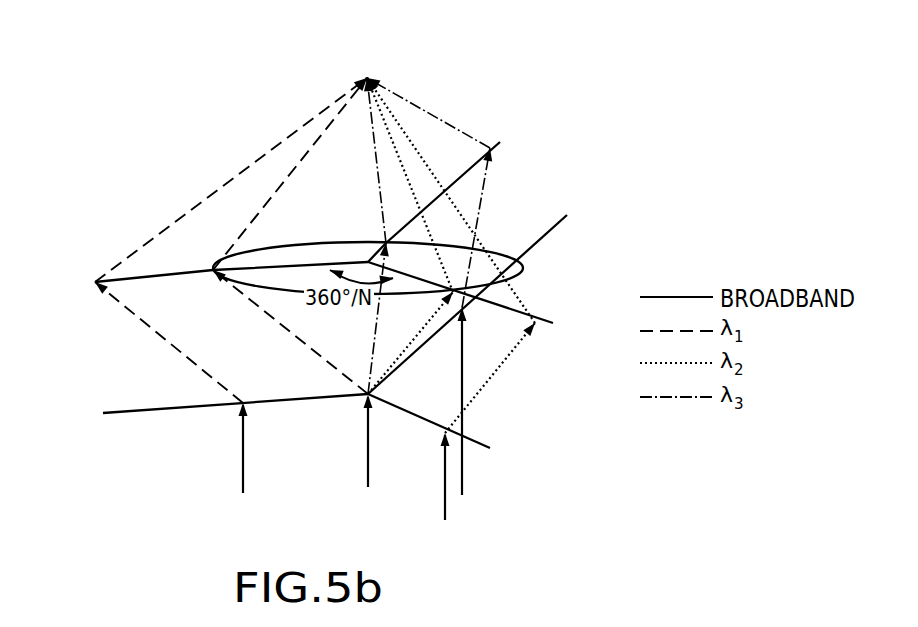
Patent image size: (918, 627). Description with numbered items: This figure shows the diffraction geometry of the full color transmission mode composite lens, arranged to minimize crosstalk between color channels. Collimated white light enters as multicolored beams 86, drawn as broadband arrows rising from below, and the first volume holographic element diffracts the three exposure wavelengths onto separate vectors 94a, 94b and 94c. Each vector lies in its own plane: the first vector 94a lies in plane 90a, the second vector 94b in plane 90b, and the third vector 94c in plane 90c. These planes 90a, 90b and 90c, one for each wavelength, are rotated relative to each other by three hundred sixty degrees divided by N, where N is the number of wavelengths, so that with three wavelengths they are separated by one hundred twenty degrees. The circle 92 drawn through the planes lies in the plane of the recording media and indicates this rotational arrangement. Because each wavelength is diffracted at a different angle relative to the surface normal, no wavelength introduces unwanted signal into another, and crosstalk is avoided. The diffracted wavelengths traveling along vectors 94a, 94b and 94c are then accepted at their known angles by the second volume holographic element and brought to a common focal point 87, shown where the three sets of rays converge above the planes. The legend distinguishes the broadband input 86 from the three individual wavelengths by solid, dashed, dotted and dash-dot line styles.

The multicolored beams 86 is at (464, 529).
The focal point 87 is at (368, 74).
The plane 90a is at (66, 282).
The plane 90b is at (511, 458).
The plane 90c is at (520, 123).
The circle 92 is at (505, 259).
The vector 94a is at (153, 330).
The vector 94b is at (508, 356).
The vector 94c is at (481, 200).